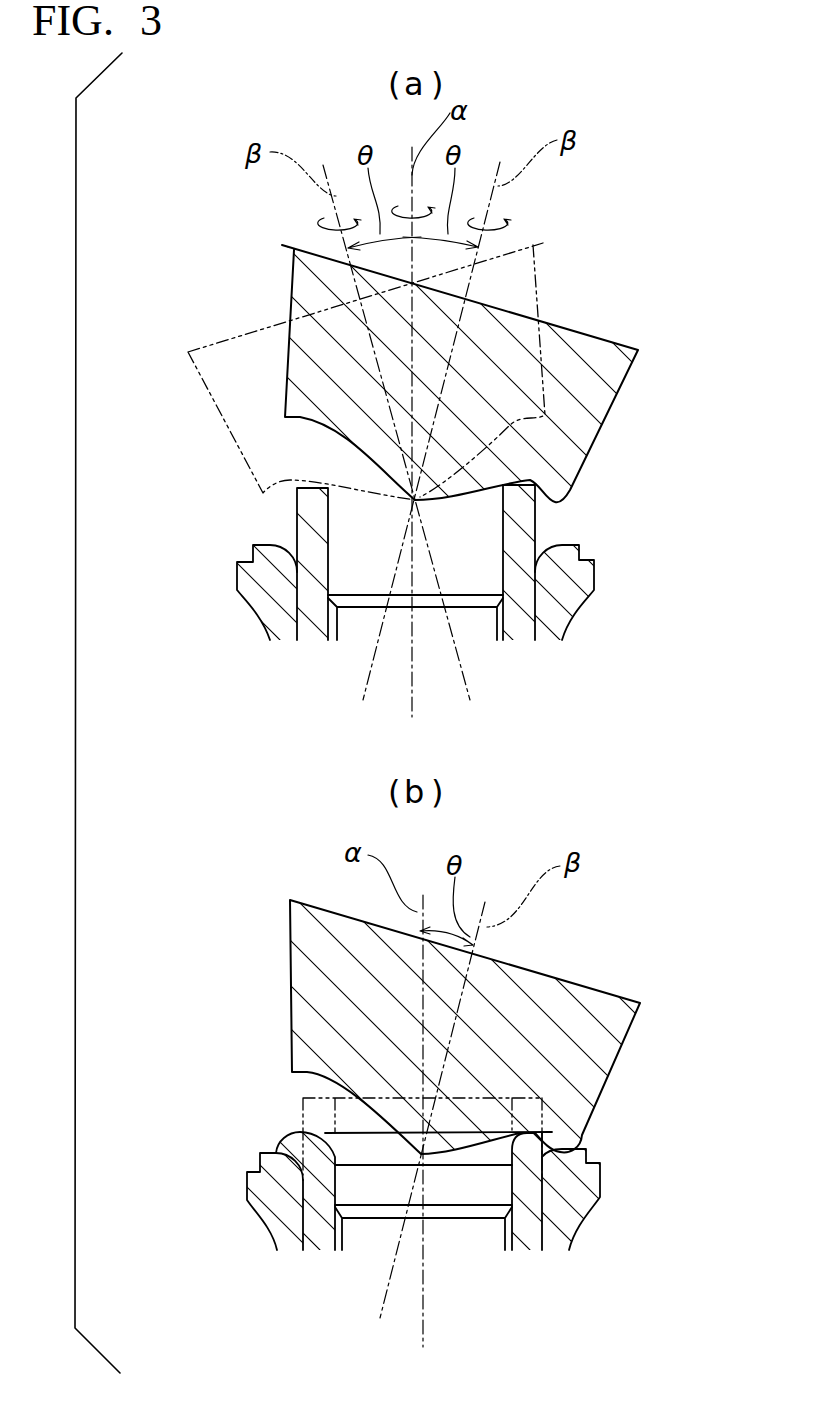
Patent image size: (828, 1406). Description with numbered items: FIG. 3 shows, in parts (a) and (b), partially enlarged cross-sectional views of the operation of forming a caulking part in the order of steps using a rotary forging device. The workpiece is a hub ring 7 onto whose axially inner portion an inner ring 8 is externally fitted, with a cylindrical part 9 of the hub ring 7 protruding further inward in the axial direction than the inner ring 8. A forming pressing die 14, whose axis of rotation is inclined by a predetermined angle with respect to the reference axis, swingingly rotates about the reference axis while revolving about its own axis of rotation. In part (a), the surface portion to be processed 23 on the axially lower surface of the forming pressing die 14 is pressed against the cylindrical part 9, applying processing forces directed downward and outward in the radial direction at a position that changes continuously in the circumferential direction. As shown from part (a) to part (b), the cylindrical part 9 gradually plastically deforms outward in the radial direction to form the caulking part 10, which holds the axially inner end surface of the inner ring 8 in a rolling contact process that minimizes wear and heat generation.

The hub ring 7 is at (515, 605).
The inner ring 8 is at (270, 580).
The cylindrical part 9 is at (308, 514).
The caulking part 10 is at (287, 1150).
The forming pressing die 14 is at (250, 370).
The surface portion to be processed 23 is at (563, 506).